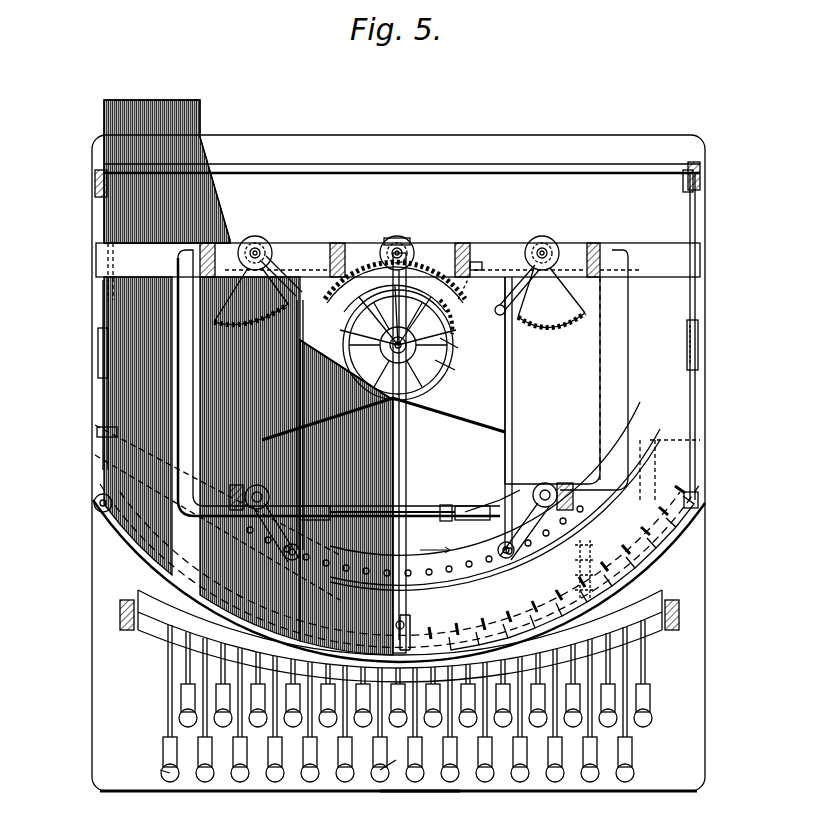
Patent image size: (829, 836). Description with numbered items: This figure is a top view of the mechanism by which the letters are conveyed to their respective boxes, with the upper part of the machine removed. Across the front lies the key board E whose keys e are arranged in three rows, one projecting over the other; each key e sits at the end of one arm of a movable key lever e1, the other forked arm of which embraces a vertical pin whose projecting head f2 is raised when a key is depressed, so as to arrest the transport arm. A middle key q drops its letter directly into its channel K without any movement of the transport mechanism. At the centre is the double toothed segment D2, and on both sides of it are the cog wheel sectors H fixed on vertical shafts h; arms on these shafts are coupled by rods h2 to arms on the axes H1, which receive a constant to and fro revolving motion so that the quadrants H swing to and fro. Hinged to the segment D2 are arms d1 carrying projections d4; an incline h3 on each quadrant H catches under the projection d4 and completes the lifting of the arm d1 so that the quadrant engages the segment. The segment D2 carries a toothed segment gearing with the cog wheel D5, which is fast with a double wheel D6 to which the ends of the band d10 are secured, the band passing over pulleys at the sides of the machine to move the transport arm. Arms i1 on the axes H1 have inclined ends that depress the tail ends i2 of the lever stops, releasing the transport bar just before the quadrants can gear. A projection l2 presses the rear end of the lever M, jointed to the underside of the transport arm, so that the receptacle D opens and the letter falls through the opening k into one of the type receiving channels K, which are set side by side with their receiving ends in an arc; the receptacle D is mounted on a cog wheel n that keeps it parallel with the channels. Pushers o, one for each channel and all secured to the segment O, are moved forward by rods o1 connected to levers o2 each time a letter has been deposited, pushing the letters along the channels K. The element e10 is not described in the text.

The type receiving channel K is at (152, 106).
The vertical shaft h is at (262, 246).
The projection l2 is at (399, 242).
The cog wheel sector H is at (548, 338).
The axis H1 is at (560, 476).
The receptacle D is at (326, 296).
The double toothed segment D2 is at (401, 331).
The cog wheel D5 is at (455, 318).
The double wheel or drum D6 is at (450, 374).
The lever M is at (467, 350).
The rod h2 is at (300, 362).
The incline h3 is at (471, 301).
The arm d1 is at (479, 257).
The projection d4 is at (486, 282).
The band d10 is at (496, 426).
The arm i1 is at (422, 523).
The tail end i2 is at (470, 510).
The projecting head f2 is at (468, 570).
The rod o1 is at (103, 400).
The lever o2 is at (682, 180).
The opening k is at (150, 530).
The pusher o is at (564, 549).
The segment O is at (551, 601).
The cog wheel n is at (404, 612).
The key lever e1 is at (168, 684).
The key e is at (560, 756).
The end key e10 is at (148, 771).
The middle key q is at (388, 765).
The key board E is at (426, 789).